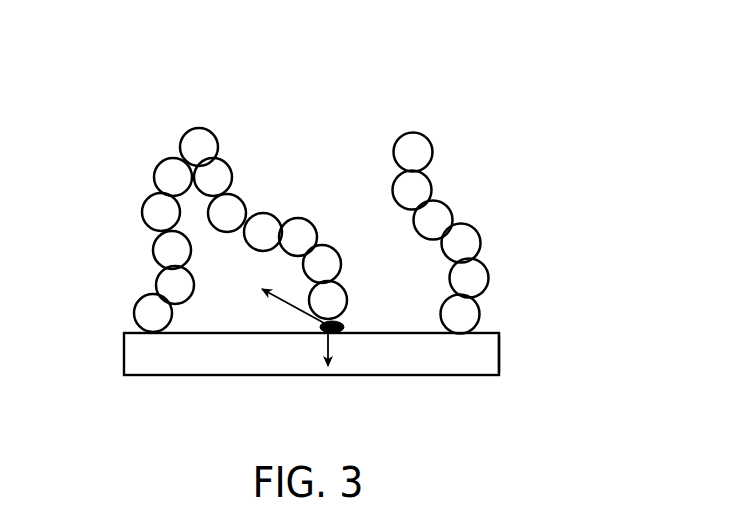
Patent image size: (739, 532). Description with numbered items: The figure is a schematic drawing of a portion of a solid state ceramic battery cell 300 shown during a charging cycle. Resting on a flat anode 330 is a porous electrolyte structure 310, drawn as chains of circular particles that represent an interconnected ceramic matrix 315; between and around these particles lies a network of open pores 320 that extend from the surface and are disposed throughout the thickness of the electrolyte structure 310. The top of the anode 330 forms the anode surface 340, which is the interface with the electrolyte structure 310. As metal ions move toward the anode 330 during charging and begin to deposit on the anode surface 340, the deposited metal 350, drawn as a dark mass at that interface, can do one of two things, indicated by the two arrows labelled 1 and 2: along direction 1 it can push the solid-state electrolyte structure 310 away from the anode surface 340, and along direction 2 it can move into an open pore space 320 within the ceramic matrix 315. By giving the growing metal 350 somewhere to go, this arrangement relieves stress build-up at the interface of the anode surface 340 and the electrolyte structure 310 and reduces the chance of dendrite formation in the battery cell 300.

The solid state battery cell 300 is at (445, 60).
The porous electrolyte structure 310 is at (199, 181).
The interconnected ceramic matrix 315 is at (141, 208).
The open pores 320 is at (232, 265).
The anode 330 is at (447, 375).
The anode surface 340 is at (500, 350).
The metal 350 is at (345, 325).
The direction 1 arrow 1 is at (341, 349).
The direction 2 arrow 2 is at (293, 311).